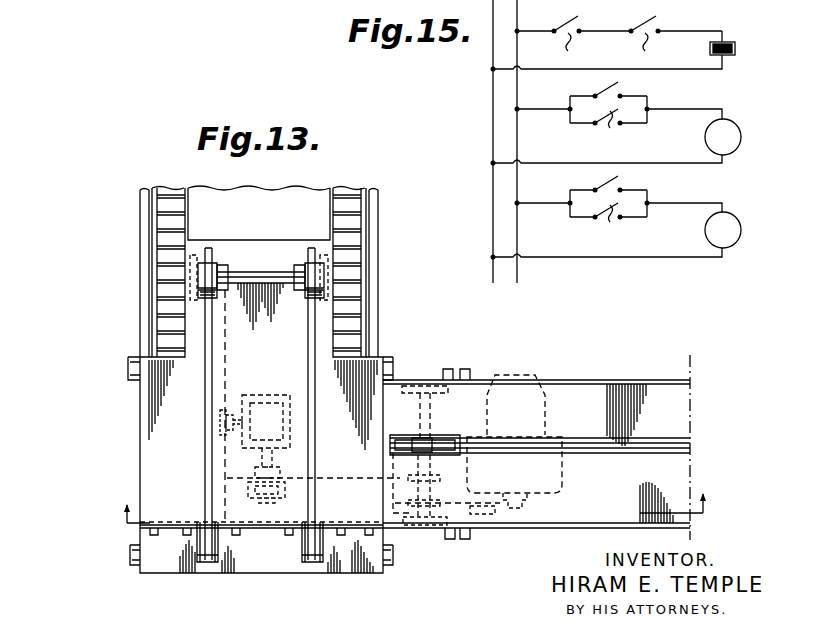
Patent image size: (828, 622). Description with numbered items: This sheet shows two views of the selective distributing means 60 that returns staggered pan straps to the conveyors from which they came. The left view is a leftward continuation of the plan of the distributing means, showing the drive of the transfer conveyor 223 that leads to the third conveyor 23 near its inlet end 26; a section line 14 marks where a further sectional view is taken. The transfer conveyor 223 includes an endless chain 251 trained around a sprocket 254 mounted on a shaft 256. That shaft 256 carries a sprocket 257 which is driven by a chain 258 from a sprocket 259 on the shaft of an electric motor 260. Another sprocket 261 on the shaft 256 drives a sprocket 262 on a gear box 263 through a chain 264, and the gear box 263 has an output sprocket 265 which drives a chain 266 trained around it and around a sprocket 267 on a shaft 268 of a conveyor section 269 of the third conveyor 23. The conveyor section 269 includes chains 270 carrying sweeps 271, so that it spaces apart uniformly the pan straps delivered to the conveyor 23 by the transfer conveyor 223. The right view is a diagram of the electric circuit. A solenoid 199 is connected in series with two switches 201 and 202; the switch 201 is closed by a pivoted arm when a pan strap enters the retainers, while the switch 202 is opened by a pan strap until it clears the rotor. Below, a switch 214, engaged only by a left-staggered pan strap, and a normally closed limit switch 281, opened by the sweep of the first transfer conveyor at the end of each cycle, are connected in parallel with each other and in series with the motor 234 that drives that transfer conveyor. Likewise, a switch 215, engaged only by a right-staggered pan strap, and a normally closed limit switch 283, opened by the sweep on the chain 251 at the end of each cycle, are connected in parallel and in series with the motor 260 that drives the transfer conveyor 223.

In FIG. 13, the section line 14- 14 is at (413, 512).
In FIG. 13, the third conveyor 23 is at (143, 268).
In FIG. 13, the inlet end of third conveyor 26 is at (152, 452).
In FIG. 13, the selective distributing means 60 is at (570, 380).
In FIG. 15, the solenoid 199 is at (736, 49).
In FIG. 15, the switch 201 is at (574, 38).
In FIG. 15, the switch 202 is at (666, 38).
In FIG. 15, the switch 214 is at (622, 90).
In FIG. 15, the switch 215 is at (622, 184).
In FIG. 13, the transfer conveyor 223 is at (692, 446).
In FIG. 15, the motor 234 is at (742, 137).
In FIG. 13, the endless chain 251 is at (672, 438).
In FIG. 13, the sprocket 254 is at (430, 440).
In FIG. 13, the shaft 256 is at (416, 400).
In FIG. 13, the sprocket 257 is at (422, 530).
In FIG. 13, the chain 258 is at (482, 506).
In FIG. 13, the sprocket 259 is at (520, 514).
In FIG. 13, the electric motor 260 is at (560, 478).
In FIG. 15, the electric motor 260 is at (742, 230).
In FIG. 13, the sprocket 261 is at (432, 512).
In FIG. 13, the sprocket 262 is at (242, 490).
In FIG. 13, the gear box 263 is at (268, 400).
In FIG. 13, the chain 264 is at (350, 480).
In FIG. 13, the output sprocket 265 is at (220, 428).
In FIG. 13, the chain 266 is at (228, 340).
In FIG. 13, the sprocket 267 is at (225, 262).
In FIG. 13, the shaft 268 is at (282, 272).
In FIG. 13, the conveyor section 269 is at (150, 403).
In FIG. 13, the chains 270 is at (205, 458).
In FIG. 13, the sweeps 271 is at (208, 570).
In FIG. 15, the limit switch 281 is at (598, 124).
In FIG. 15, the limit switch 283 is at (598, 218).